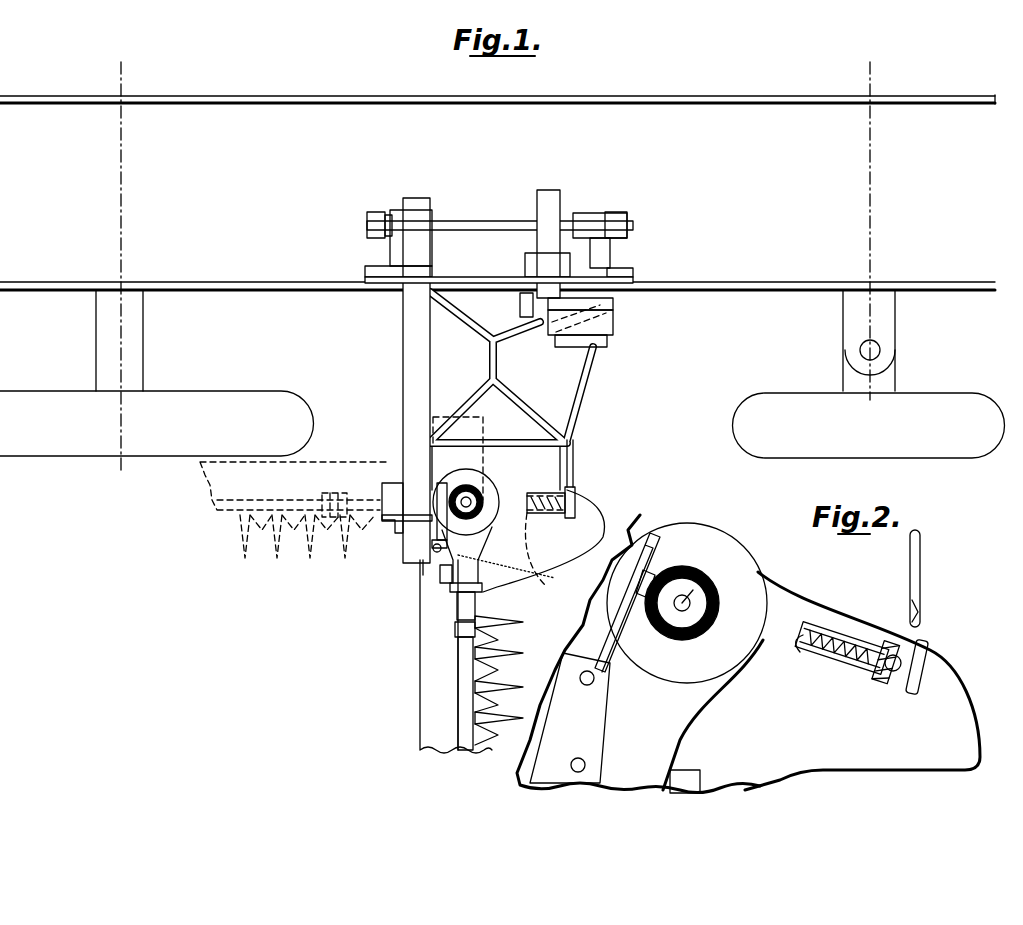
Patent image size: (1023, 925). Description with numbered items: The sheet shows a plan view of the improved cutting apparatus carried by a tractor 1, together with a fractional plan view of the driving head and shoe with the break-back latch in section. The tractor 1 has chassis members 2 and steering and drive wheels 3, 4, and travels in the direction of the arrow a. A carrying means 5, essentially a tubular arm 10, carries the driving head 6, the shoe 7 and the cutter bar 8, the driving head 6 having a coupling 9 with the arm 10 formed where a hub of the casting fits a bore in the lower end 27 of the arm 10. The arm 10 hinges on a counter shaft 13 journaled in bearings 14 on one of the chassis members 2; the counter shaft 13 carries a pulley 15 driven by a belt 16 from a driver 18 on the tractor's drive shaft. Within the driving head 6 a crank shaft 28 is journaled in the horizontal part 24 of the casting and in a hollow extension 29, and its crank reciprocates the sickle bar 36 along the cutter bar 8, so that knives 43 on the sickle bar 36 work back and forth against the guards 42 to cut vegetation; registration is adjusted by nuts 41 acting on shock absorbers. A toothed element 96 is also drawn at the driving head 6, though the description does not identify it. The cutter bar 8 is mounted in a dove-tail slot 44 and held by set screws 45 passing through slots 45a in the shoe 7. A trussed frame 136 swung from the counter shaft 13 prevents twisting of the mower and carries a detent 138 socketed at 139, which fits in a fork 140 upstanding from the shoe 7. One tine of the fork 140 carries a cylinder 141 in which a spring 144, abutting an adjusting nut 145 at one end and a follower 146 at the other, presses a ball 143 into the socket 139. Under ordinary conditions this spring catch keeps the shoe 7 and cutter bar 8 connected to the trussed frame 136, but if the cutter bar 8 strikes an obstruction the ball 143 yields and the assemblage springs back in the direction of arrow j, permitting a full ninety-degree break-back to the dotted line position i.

In FIG. 1, the tractor 1 is at (973, 185).
In FIG. 1, the chassis members 2 is at (785, 100).
In FIG. 1, the steering wheels 3 is at (951, 400).
In FIG. 1, the drive wheels 4 is at (145, 445).
In FIG. 1, the carrying means 5 is at (403, 335).
In FIG. 1, the driving head 6 is at (452, 462).
In FIG. 1, the shoe 7 is at (590, 522).
In FIG. 2, the shoe 7 is at (940, 678).
In FIG. 1, the cutter bar 8 is at (430, 697).
In FIG. 1, the coupling 9 is at (403, 493).
In FIG. 1, the arm 10 is at (403, 352).
In FIG. 1, the counter shaft 13 is at (466, 221).
In FIG. 1, the bearings 14 is at (392, 210).
In FIG. 1, the pulley 15 is at (560, 200).
In FIG. 1, the driving belt 16 is at (613, 325).
In FIG. 1, the driver 18 is at (613, 308).
In FIG. 1, the horizontal part 24 is at (480, 520).
In FIG. 2, the horizontal part 24 is at (785, 585).
In FIG. 1, the lower end 27 is at (400, 530).
In FIG. 1, the crank shaft 28 is at (500, 490).
In FIG. 2, the crank shaft 28 is at (715, 600).
In FIG. 1, the hollow extension 29 is at (445, 580).
In FIG. 1, the sickle bar 36 is at (462, 697).
In FIG. 1, the nuts 41 is at (472, 500).
In FIG. 2, the nuts 41 is at (700, 592).
In FIG. 1, the guards 42 is at (483, 688).
In FIG. 1, the knives 43 is at (483, 655).
In FIG. 1, the dove-tail slot 44 is at (430, 575).
In FIG. 1, the set screws 45 is at (440, 552).
In FIG. 1, the slots 45a is at (509, 570).
In FIG. 1, the gear 96 is at (478, 492).
In FIG. 2, the gear 96 is at (700, 575).
In FIG. 1, the trussed frame 136 is at (600, 358).
In FIG. 1, the detent 138 is at (570, 460).
In FIG. 2, the detent 138 is at (922, 545).
In FIG. 1, the socket 139 is at (578, 470).
In FIG. 2, the socket 139 is at (918, 600).
In FIG. 1, the fork 140 is at (575, 500).
In FIG. 2, the fork 140 is at (928, 650).
In FIG. 1, the cylinder 141 is at (540, 514).
In FIG. 2, the cylinder 141 is at (815, 628).
In FIG. 1, the ball 143 is at (582, 480).
In FIG. 2, the ball 143 is at (885, 678).
In FIG. 1, the spring 144 is at (546, 515).
In FIG. 2, the spring 144 is at (845, 635).
In FIG. 2, the nut 145 is at (884, 668).
In FIG. 2, the follower 146 is at (882, 670).
In FIG. 1, the arrow a is at (806, 333).
In FIG. 1, the dotted line position i is at (295, 510).
In FIG. 2, the arrow j is at (855, 746).